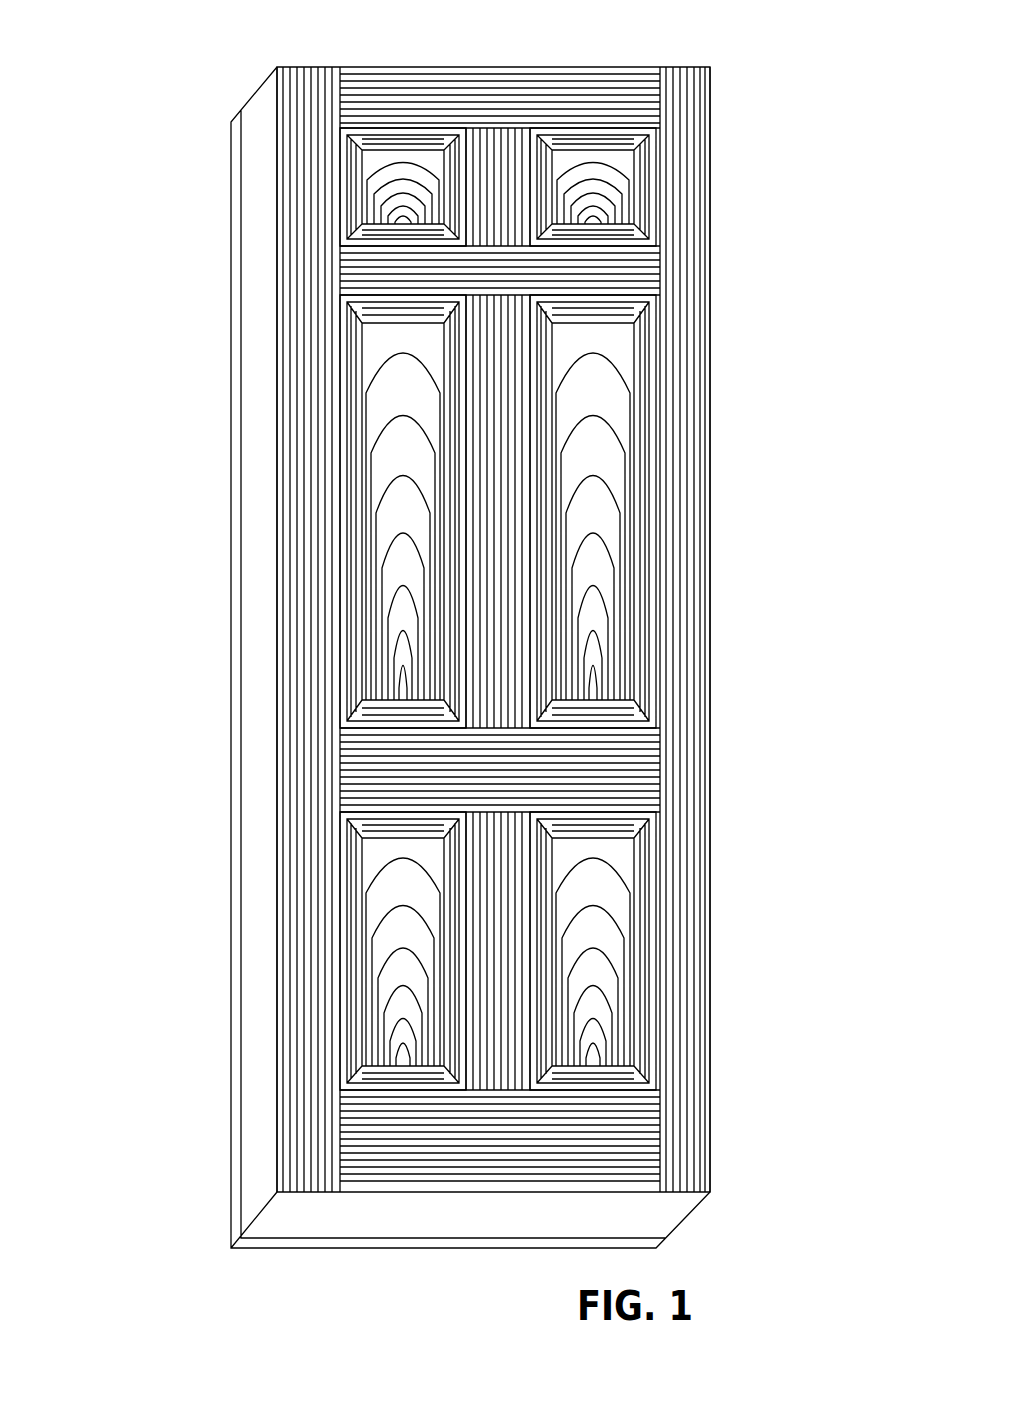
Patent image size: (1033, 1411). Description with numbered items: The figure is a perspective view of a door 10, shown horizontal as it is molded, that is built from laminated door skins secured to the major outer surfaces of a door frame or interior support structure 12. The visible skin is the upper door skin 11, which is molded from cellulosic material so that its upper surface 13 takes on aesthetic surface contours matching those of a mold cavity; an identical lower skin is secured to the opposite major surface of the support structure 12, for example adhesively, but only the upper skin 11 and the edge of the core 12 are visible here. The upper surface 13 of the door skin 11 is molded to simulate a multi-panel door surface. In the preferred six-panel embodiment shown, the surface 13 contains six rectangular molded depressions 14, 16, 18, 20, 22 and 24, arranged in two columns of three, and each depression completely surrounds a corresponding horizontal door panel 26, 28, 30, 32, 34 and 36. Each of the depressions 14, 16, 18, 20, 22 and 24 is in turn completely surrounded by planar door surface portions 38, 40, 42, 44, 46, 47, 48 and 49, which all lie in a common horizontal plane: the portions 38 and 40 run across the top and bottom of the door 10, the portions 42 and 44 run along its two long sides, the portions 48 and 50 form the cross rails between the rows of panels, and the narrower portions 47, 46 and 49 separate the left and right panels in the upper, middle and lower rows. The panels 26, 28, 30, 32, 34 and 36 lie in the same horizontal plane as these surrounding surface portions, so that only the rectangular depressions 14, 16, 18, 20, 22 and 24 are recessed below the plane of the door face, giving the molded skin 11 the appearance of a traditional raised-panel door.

The door 10 is at (234, 93).
The upper door skin 11 is at (288, 548).
The door frame or interior support structure 12 is at (258, 737).
The upper surface of the door skin 13 is at (677, 225).
The molded depression 14 is at (400, 180).
The molded depression 16 is at (638, 165).
The molded depression 18 is at (356, 358).
The molded depression 20 is at (640, 312).
The molded depression 22 is at (365, 915).
The molded depression 24 is at (643, 877).
The door panel 26 is at (400, 180).
The door panel 28 is at (592, 200).
The door panel 30 is at (406, 437).
The door panel 32 is at (596, 467).
The door panel 34 is at (388, 950).
The door panel 36 is at (597, 950).
The planar door surface portion 38 is at (553, 82).
The planar door surface portion 40 is at (422, 1148).
The planar door surface portion 42 is at (320, 615).
The planar door surface portion 44 is at (687, 546).
The planar door surface portion 46 is at (510, 385).
The planar door surface portion 47 is at (507, 158).
The planar door surface portion 48 is at (658, 277).
The planar door surface portion 49 is at (515, 1025).
The lock rail 50 is at (660, 757).